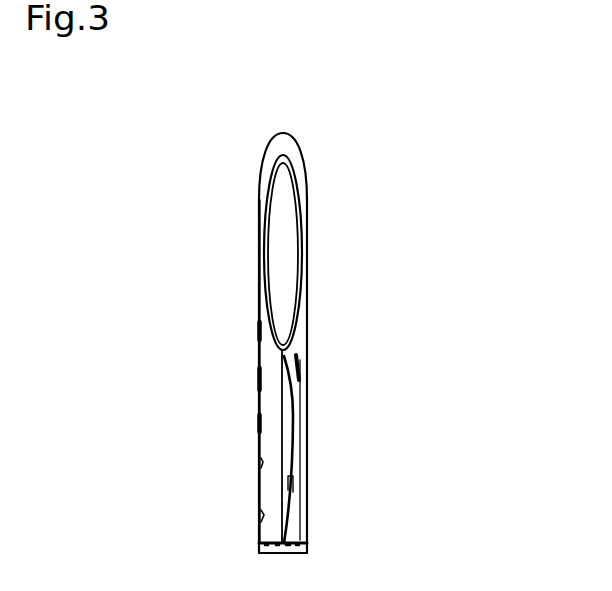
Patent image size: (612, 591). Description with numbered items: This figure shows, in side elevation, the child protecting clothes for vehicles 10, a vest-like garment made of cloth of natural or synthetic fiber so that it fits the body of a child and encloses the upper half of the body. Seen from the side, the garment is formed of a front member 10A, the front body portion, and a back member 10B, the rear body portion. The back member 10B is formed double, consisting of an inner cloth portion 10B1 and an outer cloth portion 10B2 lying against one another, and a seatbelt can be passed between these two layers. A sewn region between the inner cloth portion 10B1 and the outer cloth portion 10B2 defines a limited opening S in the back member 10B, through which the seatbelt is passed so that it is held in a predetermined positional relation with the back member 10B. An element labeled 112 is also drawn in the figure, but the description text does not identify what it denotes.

The child protecting clothes for vehicles 10 is at (333, 330).
The elongated window / oval opening 112 is at (266, 255).
The front member 10A is at (258, 398).
The back member 10B is at (402, 449).
The inner cloth portion 10B1 is at (305, 458).
The outer cloth portion 10B2 is at (305, 407).
The opening S is at (300, 495).